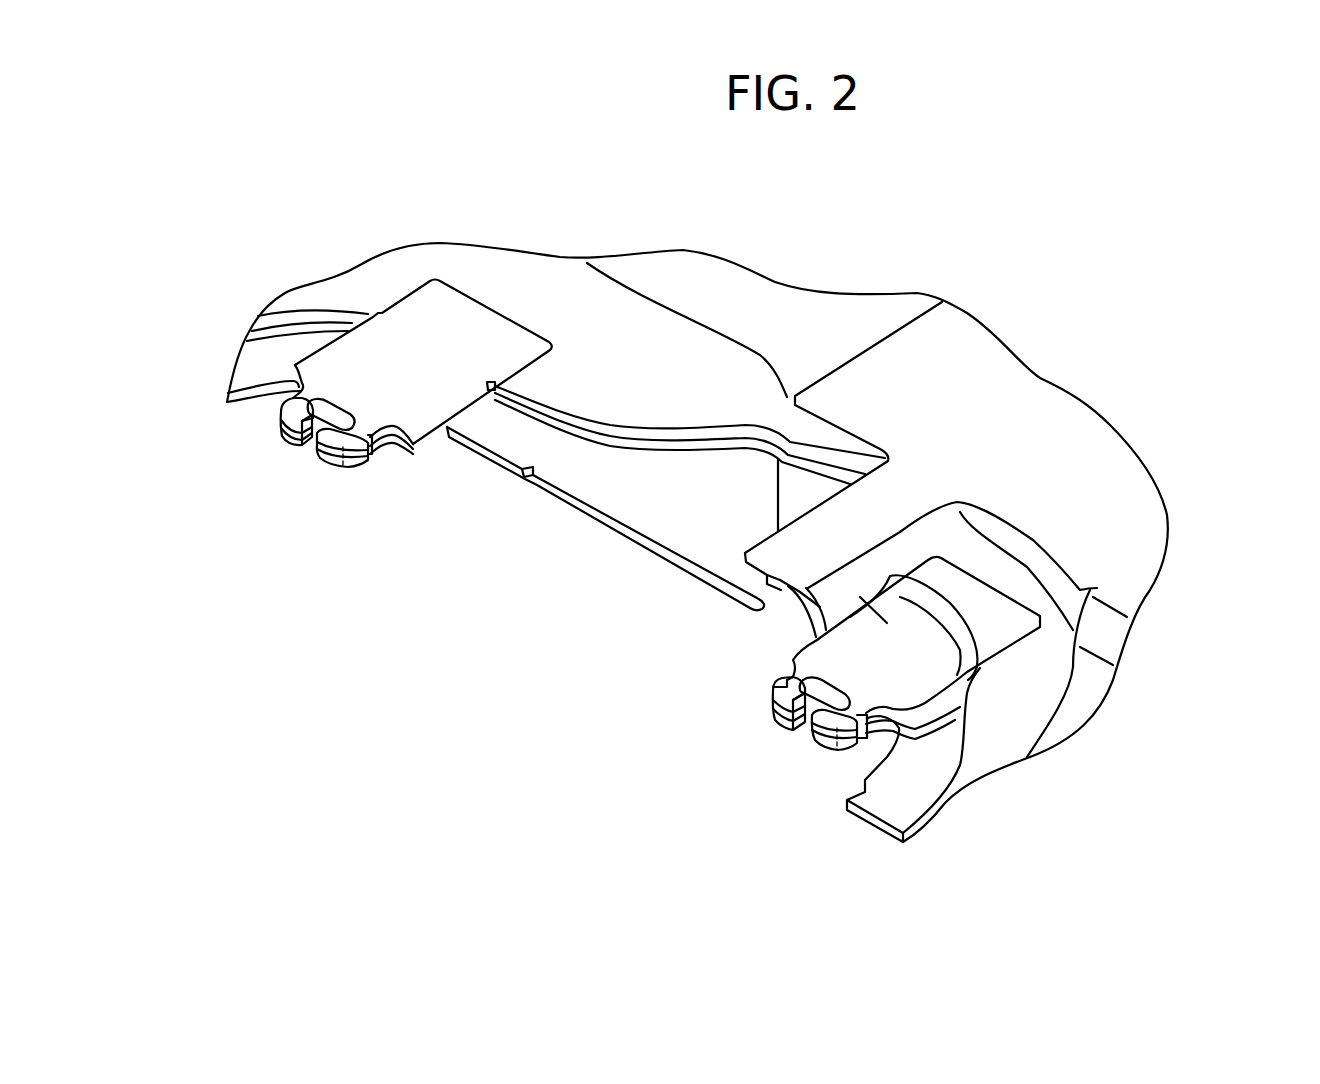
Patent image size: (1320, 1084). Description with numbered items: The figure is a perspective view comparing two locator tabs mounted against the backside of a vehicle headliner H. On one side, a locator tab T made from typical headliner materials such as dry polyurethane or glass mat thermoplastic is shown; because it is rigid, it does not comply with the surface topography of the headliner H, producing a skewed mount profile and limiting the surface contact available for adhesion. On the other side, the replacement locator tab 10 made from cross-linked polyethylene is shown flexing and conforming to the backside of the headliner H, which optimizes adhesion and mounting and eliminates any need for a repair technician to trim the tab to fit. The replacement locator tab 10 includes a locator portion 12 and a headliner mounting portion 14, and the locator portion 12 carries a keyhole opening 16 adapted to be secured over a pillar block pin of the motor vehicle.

The headliner H is at (307, 300).
The locator tab T is at (269, 453).
The replacement locator tab 10 is at (699, 741).
The locator portion 12 is at (867, 717).
The headliner mounting portion 14 is at (887, 623).
The keyhole opening 16 is at (792, 706).